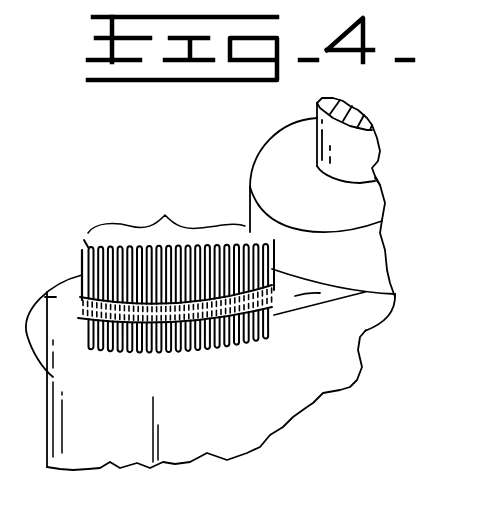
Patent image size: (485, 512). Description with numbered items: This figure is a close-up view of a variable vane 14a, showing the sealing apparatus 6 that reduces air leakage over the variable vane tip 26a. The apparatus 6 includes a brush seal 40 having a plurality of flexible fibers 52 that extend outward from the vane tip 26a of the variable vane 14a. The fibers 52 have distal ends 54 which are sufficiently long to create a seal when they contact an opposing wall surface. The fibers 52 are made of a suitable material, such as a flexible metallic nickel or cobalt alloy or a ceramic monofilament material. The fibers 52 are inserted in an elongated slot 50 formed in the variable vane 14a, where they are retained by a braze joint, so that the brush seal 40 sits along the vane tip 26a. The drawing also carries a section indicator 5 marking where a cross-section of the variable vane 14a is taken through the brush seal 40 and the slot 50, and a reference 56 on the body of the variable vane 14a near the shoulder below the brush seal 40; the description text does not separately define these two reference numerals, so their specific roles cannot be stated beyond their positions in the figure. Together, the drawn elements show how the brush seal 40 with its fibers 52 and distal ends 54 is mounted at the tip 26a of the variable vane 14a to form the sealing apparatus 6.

The sealing apparatus 6 is at (140, 200).
The brush seal 40 is at (165, 215).
The distal ends 54 is at (85, 243).
The section line 5 is at (80, 208).
The flexible fibers 52 is at (82, 260).
The variable vane tip 26a is at (55, 375).
The elongated slot 50 is at (125, 351).
The shoulder 56 is at (370, 330).
The variable vane 14a is at (235, 412).